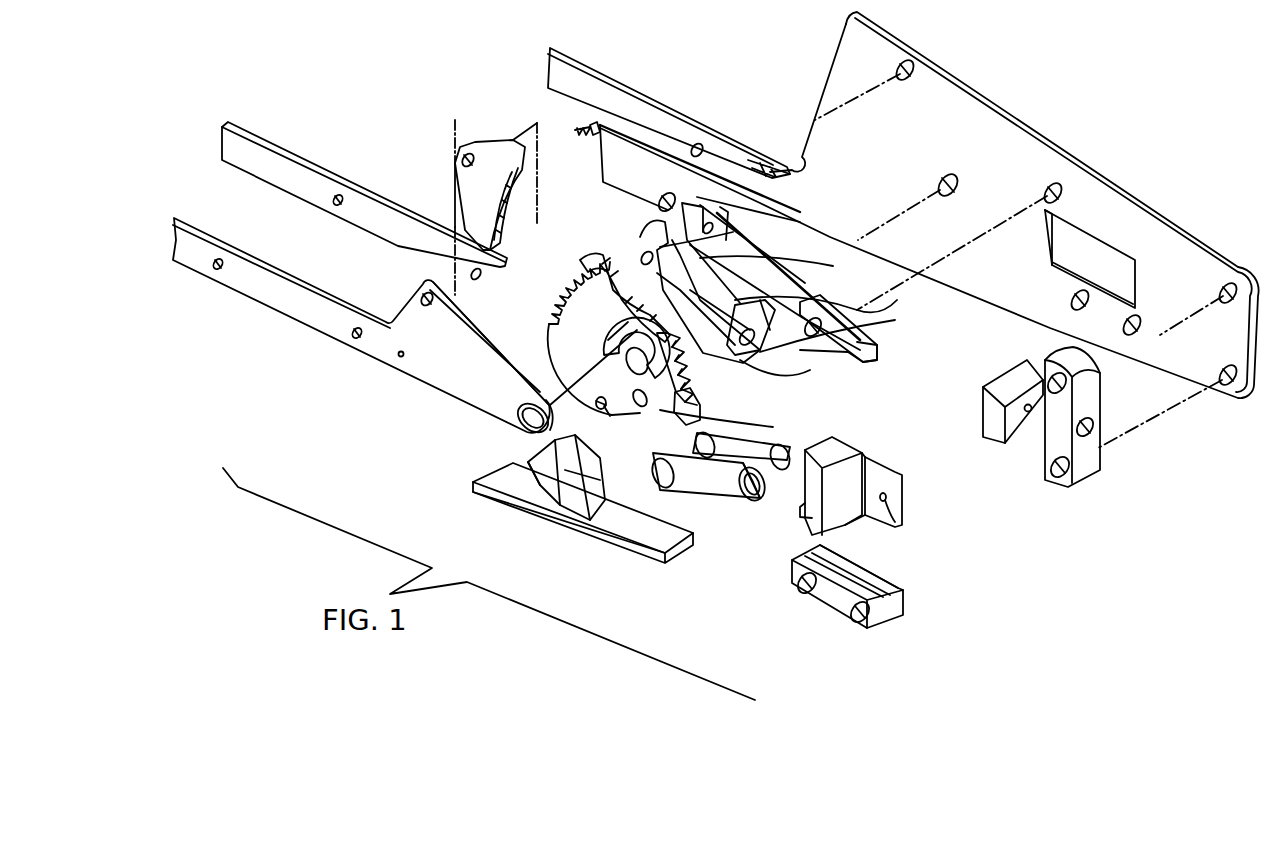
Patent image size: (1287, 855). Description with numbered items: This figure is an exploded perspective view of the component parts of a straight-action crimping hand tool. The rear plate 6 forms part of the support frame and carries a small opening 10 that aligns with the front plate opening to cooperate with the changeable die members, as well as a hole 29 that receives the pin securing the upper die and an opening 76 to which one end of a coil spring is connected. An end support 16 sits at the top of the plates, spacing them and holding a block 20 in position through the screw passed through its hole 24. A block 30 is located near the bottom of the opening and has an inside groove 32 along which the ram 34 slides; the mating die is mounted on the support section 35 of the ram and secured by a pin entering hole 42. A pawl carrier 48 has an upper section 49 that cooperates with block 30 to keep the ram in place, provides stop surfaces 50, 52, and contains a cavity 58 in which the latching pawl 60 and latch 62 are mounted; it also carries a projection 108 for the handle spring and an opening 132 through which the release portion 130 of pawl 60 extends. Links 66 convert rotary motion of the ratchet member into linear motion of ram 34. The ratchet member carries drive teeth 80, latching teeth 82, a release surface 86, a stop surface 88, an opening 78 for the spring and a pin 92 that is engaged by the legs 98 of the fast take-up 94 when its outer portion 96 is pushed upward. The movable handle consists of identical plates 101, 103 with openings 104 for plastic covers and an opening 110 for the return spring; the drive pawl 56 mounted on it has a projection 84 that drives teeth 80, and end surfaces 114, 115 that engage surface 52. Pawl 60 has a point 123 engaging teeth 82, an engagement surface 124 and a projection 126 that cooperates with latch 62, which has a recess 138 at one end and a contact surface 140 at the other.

The rear plate 6 is at (1240, 350).
The opening 10 is at (1100, 243).
The end support 16 is at (1103, 465).
The block 20 is at (992, 440).
The hole 24 is at (1090, 427).
The hole 29 is at (1154, 297).
The block 30 is at (832, 608).
The groove 32 is at (893, 583).
The ram 34 is at (905, 482).
The support section 35 is at (852, 488).
The hole 42 is at (903, 530).
The pawl carrier 48 is at (656, 165).
The upper section 49 is at (883, 347).
The stop surface 50 is at (648, 226).
The stop surface 52 is at (625, 198).
The drive pawl 56 is at (463, 160).
The cavity 58 is at (733, 203).
The latching pawl 60 is at (836, 301).
The latch 62 is at (857, 370).
The links 66 is at (720, 488).
The opening 76 is at (962, 176).
The opening 78 is at (610, 355).
The drive teeth 80 is at (612, 352).
The latching teeth 82 is at (736, 418).
The projection 84 is at (498, 264).
The release surface 86 is at (702, 404).
The stop surface 88 is at (603, 280).
The pin 92 is at (603, 408).
The fast take-up 94 is at (612, 563).
The portion 96 is at (573, 548).
The legs 98 is at (548, 420).
The plate 101 is at (322, 320).
The plate 103 is at (303, 175).
The openings 104 is at (338, 205).
The projection 108 is at (597, 132).
The opening 110 is at (517, 293).
The end surface 114 is at (472, 143).
The end surface 115 is at (505, 140).
The point 123 is at (705, 372).
The engagement surface 124 is at (777, 336).
The projection 126 is at (815, 268).
The release portion 130 is at (868, 218).
The opening 132 is at (760, 193).
The recess 138 is at (875, 325).
The contact surface 140 is at (787, 353).